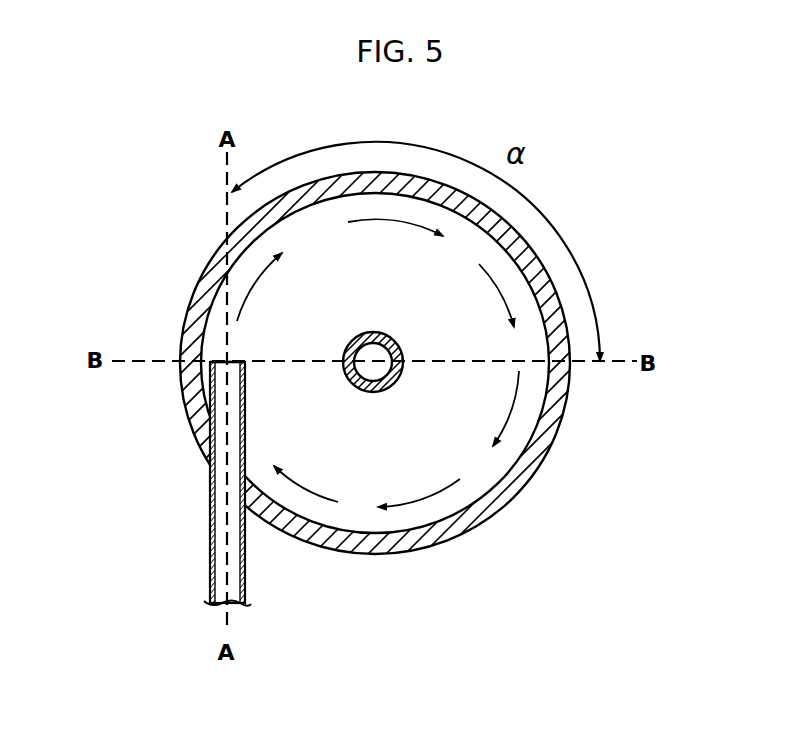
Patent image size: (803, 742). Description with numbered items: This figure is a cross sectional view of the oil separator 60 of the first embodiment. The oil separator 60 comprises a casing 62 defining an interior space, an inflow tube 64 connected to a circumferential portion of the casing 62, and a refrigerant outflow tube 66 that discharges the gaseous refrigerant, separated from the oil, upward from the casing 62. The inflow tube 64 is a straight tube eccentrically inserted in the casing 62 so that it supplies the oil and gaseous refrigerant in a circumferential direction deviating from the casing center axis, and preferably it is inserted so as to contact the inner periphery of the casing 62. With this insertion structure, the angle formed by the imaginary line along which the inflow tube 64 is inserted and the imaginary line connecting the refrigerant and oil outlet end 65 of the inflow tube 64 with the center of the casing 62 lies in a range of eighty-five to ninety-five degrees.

The oil separator 60 is at (401, 389).
The casing 62 is at (518, 478).
The inflow tube 64 is at (212, 546).
The refrigerant and oil outlet end 65 is at (227, 360).
The refrigerant outflow tube 66 is at (365, 386).